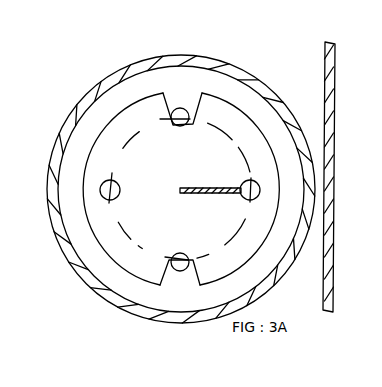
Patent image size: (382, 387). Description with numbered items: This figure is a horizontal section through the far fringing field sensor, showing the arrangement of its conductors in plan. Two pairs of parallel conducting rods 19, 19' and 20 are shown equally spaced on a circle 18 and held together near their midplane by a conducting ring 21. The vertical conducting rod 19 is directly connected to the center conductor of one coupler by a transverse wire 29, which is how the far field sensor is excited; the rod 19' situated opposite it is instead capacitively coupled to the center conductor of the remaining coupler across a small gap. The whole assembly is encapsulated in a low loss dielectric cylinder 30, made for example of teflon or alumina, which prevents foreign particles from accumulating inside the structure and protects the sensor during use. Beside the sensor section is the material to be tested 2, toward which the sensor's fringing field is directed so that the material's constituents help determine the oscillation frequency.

The material to be tested 2 is at (332, 55).
The circle 18 is at (117, 148).
The vertical conducting rod 19 is at (236, 184).
The conducting rod 19' is at (129, 184).
The parallel conducting rod 20 is at (183, 125).
The conducting ring 21 is at (181, 180).
The transverse wire 29 is at (215, 193).
The dielectric cylinder 30 is at (106, 300).